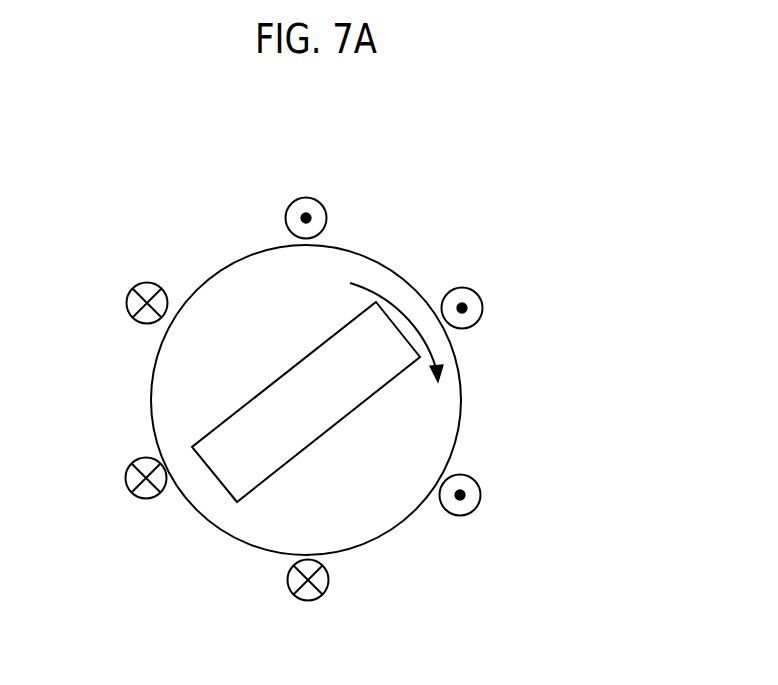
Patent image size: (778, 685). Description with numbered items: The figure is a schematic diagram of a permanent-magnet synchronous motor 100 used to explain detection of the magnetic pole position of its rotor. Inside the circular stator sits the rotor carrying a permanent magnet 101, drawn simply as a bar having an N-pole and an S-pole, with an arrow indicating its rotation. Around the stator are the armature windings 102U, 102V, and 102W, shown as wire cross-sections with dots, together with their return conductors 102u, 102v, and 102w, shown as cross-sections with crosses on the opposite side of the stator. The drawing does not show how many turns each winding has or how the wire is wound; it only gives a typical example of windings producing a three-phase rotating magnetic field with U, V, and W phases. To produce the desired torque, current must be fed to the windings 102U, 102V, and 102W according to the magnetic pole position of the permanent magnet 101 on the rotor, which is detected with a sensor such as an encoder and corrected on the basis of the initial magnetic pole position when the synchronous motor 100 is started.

The synchronous motor 100 is at (482, 214).
The permanent magnet 101 is at (337, 330).
The armature winding 102U is at (315, 200).
The armature winding 102V is at (475, 292).
The armature winding 102W is at (480, 488).
The u-phase stator coil 102u is at (329, 578).
The v-phase stator coil 102v is at (126, 480).
The w-phase stator coil 102w is at (150, 283).